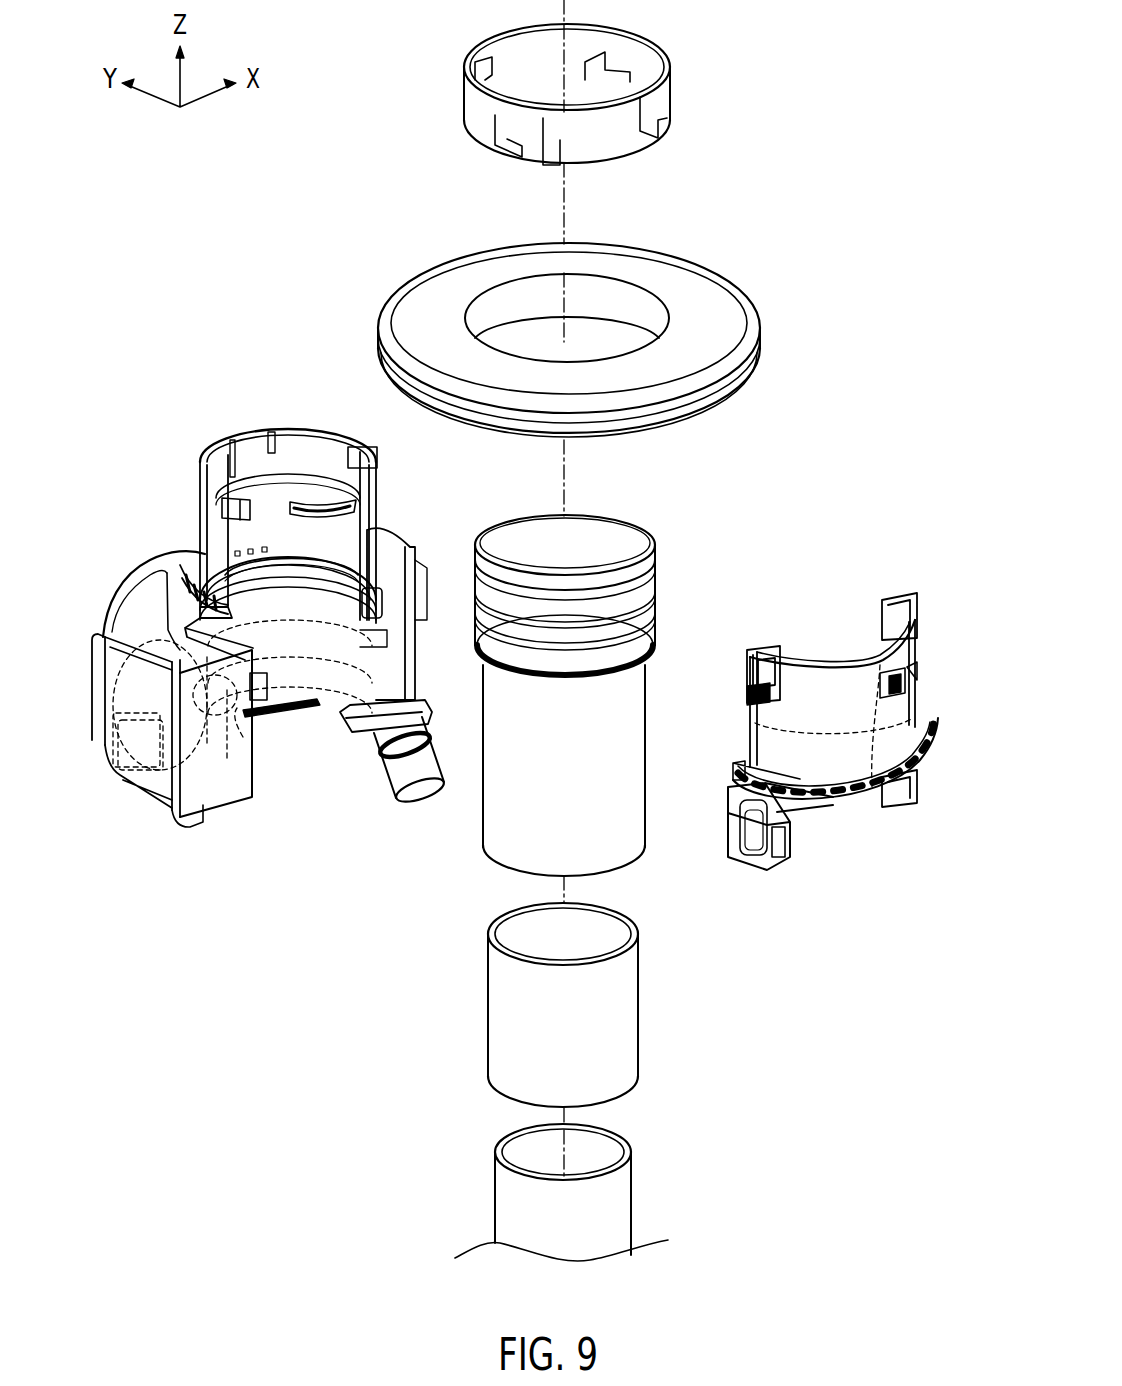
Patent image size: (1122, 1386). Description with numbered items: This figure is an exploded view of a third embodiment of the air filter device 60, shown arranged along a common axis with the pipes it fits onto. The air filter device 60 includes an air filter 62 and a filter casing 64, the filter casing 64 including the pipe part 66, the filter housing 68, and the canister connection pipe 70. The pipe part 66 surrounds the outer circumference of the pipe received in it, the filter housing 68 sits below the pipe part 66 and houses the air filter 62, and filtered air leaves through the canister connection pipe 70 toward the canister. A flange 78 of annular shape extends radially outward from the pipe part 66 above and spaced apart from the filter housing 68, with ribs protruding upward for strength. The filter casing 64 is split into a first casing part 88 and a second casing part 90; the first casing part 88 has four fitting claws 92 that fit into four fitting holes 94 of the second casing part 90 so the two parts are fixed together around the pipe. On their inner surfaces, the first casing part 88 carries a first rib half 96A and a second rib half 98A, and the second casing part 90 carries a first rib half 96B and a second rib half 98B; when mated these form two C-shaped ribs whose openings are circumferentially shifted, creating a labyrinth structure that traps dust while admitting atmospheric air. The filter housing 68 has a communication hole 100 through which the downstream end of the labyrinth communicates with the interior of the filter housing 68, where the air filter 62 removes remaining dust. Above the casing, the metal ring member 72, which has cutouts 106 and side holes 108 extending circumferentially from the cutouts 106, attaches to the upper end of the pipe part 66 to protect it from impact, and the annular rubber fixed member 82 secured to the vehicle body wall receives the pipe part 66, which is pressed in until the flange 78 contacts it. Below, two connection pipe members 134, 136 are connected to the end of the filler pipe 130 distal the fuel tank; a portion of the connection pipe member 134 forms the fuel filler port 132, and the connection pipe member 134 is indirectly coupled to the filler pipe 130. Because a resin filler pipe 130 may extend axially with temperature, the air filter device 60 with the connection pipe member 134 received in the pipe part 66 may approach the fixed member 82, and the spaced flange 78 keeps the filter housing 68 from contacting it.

The air filter device 60 is at (147, 408).
The air filter 62 is at (147, 747).
The filter casing 64 is at (440, 1068).
The pipe part 66 is at (200, 520).
The filter housing 68 is at (143, 578).
The canister connection pipe 70 is at (393, 790).
The ring member 72 is at (653, 45).
The flange 78 is at (186, 557).
The fixed member 82 is at (705, 292).
The first casing part 88 is at (218, 800).
The second casing part 90 is at (838, 797).
The fitting claw 92 is at (252, 500).
The fitting hole 94 is at (770, 662).
The first rib half 96A is at (348, 503).
The first rib half 96B is at (838, 740).
The second rib half 98A is at (337, 565).
The second rib half 98B is at (873, 762).
The communication hole 100 is at (243, 737).
The cutout 106 is at (540, 148).
The side hole 108 is at (500, 142).
The filler pipe 130 is at (620, 1215).
The fuel filler port 132 is at (624, 538).
The connection pipe member 134 is at (640, 742).
The connection pipe member 136 is at (625, 1050).